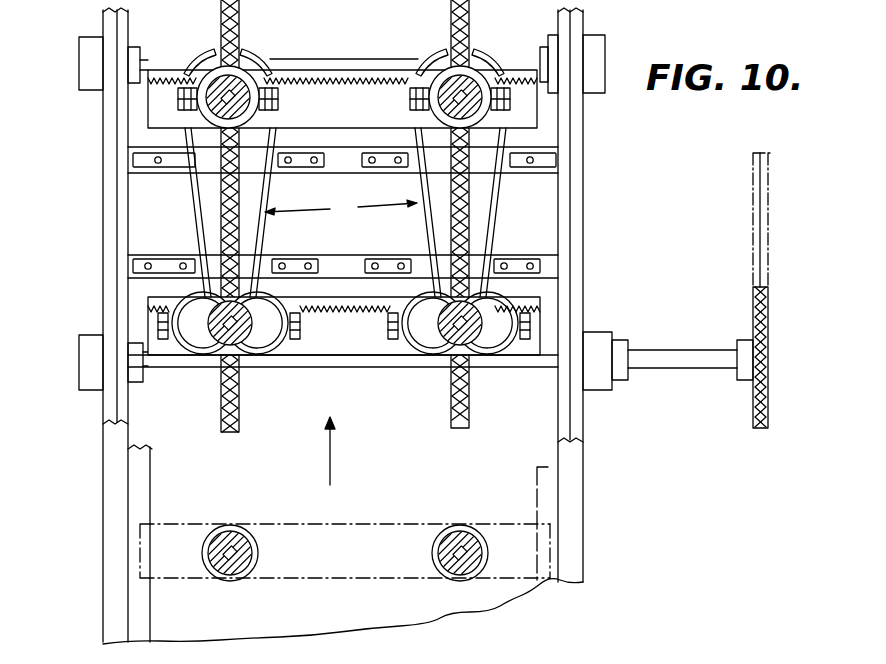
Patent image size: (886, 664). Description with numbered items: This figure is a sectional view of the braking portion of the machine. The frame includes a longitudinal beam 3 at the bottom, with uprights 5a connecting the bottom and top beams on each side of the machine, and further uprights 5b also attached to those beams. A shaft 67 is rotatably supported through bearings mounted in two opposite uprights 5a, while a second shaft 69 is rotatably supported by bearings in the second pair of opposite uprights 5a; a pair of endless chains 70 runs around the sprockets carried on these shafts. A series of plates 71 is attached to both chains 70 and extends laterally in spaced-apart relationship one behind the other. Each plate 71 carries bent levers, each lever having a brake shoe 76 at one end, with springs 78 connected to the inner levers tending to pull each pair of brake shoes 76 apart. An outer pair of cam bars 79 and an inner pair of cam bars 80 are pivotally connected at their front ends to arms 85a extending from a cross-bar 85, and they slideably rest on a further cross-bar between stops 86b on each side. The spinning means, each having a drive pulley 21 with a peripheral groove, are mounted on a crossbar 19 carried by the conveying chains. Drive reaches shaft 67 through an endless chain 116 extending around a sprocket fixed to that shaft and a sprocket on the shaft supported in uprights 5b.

The longitudinal beam 3 is at (110, 488).
The upright 5a is at (88, 67).
The upright 5b is at (90, 382).
The crossbar 19 is at (342, 532).
The drive pulley 21 is at (235, 88).
The shaft 67 is at (336, 360).
The second shaft 69 is at (378, 60).
The endless chain 70 is at (222, 418).
The plate 71 is at (160, 103).
The brake shoe 76 is at (200, 115).
The spring 78 is at (327, 80).
The outer cam bar 79 is at (163, 77).
The inner cam bar 80 is at (262, 236).
The cross-bar 85 is at (350, 256).
The arm 85a is at (182, 290).
The stop 86b is at (172, 166).
The endless chain 116 is at (768, 313).